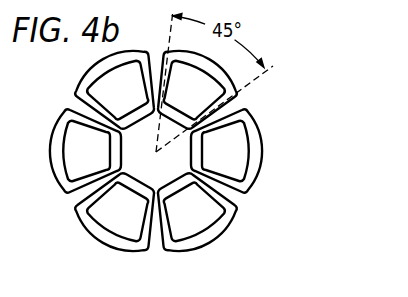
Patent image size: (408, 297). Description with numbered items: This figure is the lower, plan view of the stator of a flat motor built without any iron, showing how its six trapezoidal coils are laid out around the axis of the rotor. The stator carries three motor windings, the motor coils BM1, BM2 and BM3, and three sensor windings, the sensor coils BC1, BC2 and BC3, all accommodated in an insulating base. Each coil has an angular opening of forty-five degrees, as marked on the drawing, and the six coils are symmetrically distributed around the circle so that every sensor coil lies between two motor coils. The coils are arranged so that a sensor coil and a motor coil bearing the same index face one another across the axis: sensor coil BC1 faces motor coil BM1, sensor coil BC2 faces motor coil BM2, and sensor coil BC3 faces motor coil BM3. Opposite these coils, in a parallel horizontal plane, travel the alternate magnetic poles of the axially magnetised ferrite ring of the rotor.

The motor coil BM1 is at (249, 150).
The motor coil BM2 is at (107, 211).
The motor coil BM3 is at (115, 89).
The sensor coil BC1 is at (61, 150).
The sensor coil BC2 is at (208, 89).
The sensor coil BC3 is at (197, 211).